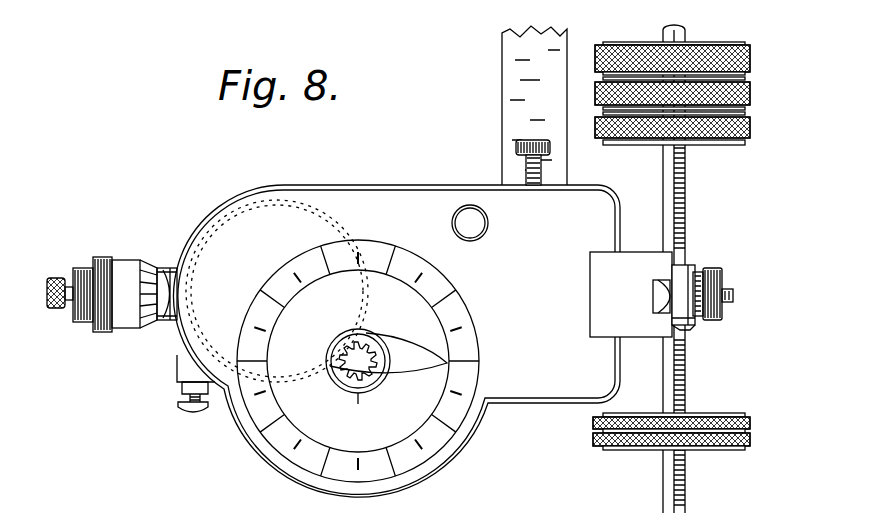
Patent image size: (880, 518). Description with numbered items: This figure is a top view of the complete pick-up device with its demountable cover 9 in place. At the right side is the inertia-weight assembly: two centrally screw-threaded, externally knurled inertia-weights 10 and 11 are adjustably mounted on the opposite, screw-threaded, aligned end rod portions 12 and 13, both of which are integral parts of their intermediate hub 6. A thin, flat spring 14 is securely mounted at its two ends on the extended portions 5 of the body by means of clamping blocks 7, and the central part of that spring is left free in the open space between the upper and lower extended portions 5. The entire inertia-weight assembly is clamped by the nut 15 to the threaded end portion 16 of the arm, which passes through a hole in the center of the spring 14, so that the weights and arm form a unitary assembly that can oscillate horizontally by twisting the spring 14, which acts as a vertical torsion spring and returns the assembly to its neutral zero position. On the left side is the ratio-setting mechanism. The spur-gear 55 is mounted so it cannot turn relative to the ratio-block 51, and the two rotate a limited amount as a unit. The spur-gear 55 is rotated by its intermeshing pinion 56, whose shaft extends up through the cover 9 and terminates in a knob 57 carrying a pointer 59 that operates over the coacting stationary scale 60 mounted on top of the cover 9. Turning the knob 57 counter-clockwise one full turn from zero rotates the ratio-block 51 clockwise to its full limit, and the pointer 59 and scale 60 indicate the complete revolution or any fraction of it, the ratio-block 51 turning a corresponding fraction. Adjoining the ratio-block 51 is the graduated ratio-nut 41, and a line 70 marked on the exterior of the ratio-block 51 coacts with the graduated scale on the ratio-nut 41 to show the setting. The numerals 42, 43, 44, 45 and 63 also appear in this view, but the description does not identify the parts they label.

The extended portion 5 is at (647, 328).
The intermediate hub 6 is at (690, 322).
The clamping block 7 is at (693, 268).
The demountable cover 9 is at (526, 403).
The inertia-weight 10 is at (596, 94).
The inertia-weight 11 is at (596, 442).
The end rod portion 12 is at (663, 170).
The end rod portion 13 is at (688, 397).
The flat spring 14 is at (653, 284).
The nut 15 is at (723, 276).
The threaded end portion 16 is at (735, 296).
The ratio-nut 41 is at (120, 329).
The knurled knob 42 is at (66, 310).
The collar 43 is at (85, 323).
The clamp screw 44 is at (526, 167).
The circular opening 45 is at (489, 233).
The ratio-block 51 is at (162, 321).
The spur-gear 55 is at (212, 346).
The pinion 56 is at (372, 343).
The knob 57 is at (362, 411).
The pointer 59 is at (450, 368).
The stationary scale 60 is at (448, 300).
The plate 63 is at (503, 76).
The line 70 is at (171, 268).